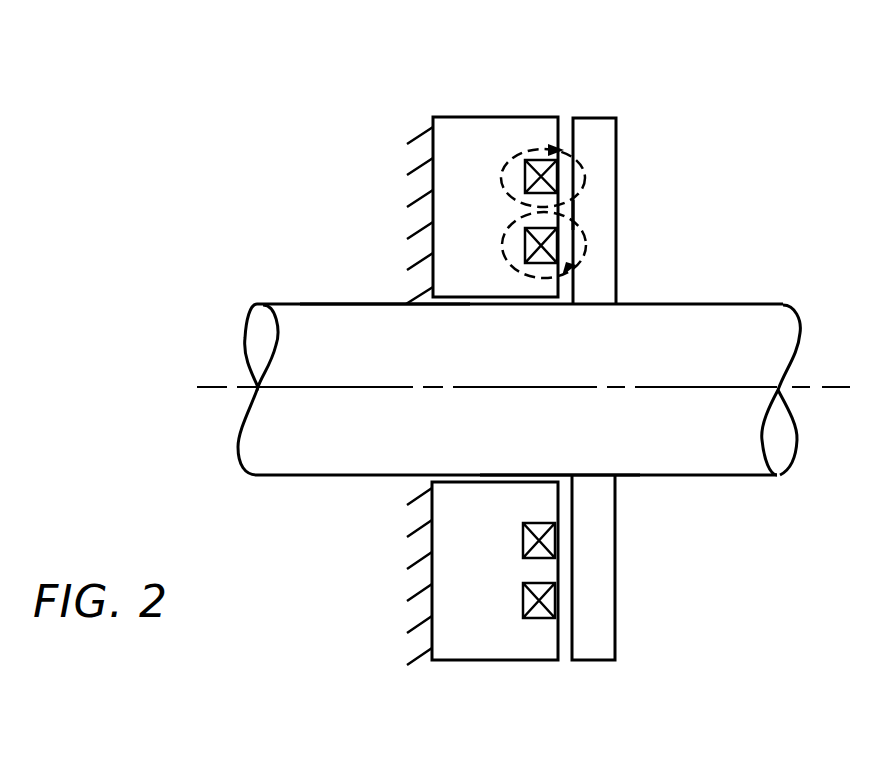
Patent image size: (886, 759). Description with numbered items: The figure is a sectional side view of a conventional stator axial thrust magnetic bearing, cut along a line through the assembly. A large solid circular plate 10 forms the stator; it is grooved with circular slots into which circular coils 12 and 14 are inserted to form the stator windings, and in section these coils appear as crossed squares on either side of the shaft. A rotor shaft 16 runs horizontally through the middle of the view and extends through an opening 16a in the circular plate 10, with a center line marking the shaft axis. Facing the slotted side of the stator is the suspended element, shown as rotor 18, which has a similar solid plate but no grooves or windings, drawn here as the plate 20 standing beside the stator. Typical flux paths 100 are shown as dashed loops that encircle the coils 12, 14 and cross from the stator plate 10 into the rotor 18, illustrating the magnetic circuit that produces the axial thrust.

The circular plate 10 is at (470, 132).
The circular coil 12 is at (558, 152).
The circular coil 14 is at (525, 247).
The rotor shaft 16 is at (337, 347).
The opening 16a is at (463, 304).
The rotor 18 is at (587, 213).
The disc / rotor 20 is at (563, 132).
The flux paths 100 is at (585, 173).